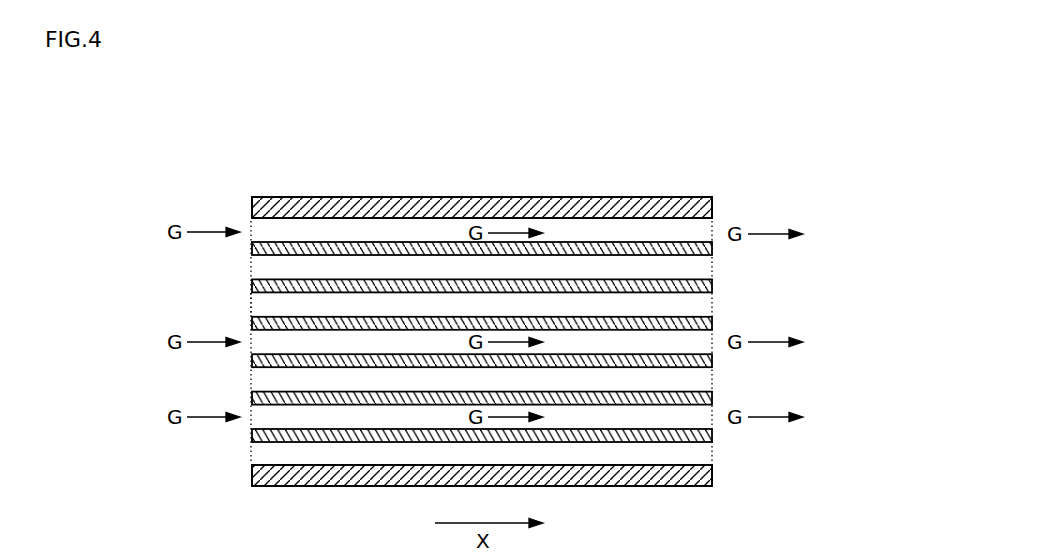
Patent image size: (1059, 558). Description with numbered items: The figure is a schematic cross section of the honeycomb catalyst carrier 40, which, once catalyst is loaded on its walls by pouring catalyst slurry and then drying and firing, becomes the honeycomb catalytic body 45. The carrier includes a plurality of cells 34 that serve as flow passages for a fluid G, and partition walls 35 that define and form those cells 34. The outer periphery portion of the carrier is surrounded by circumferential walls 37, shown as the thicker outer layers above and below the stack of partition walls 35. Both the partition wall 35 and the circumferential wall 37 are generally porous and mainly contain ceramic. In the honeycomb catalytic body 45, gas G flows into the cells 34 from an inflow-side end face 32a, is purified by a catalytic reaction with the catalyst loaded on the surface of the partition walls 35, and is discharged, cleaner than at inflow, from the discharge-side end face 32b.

The honeycomb catalyst carrier 40 is at (489, 321).
The honeycomb catalytic body 45 is at (487, 346).
The circumferential wall 37 is at (318, 197).
The partition wall 35 is at (252, 285).
The cell 34 is at (248, 295).
The inflow-side end face 32a is at (251, 455).
The discharge-side end face 32b is at (712, 455).